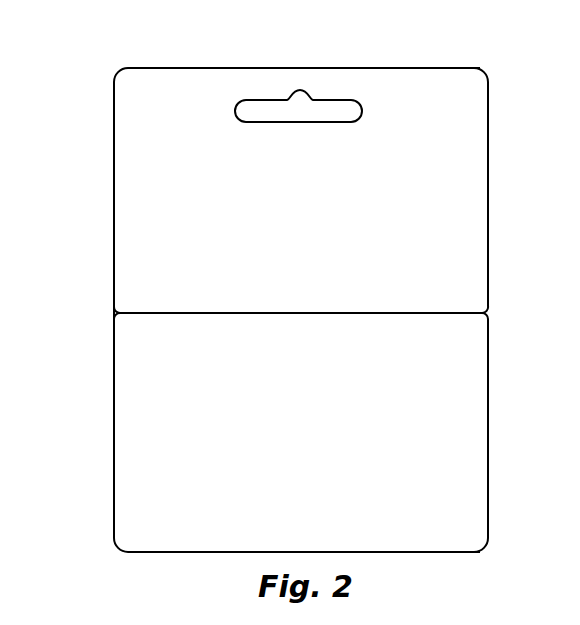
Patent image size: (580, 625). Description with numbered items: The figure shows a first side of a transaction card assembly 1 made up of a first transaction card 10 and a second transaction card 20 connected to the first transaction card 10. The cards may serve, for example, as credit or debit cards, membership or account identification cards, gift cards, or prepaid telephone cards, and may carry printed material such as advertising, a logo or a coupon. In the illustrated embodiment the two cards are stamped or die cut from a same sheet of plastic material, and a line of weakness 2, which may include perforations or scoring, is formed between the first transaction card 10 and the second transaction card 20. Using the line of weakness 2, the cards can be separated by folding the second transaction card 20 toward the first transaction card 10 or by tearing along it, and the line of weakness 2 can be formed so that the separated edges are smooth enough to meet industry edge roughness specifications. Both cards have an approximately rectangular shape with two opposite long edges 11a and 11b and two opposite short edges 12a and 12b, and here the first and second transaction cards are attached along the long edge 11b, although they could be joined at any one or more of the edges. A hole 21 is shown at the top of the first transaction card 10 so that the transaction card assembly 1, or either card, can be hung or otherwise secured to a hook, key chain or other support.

The transaction card assembly 1 is at (74, 60).
The first transaction card 10 is at (487, 128).
The second transaction card 20 is at (476, 428).
The hole 21 is at (335, 100).
The long edge 11a is at (440, 68).
The long edge 11b is at (143, 312).
The short edge 12a is at (114, 205).
The short edge 12b is at (488, 220).
The line of weakness 2 is at (457, 313).